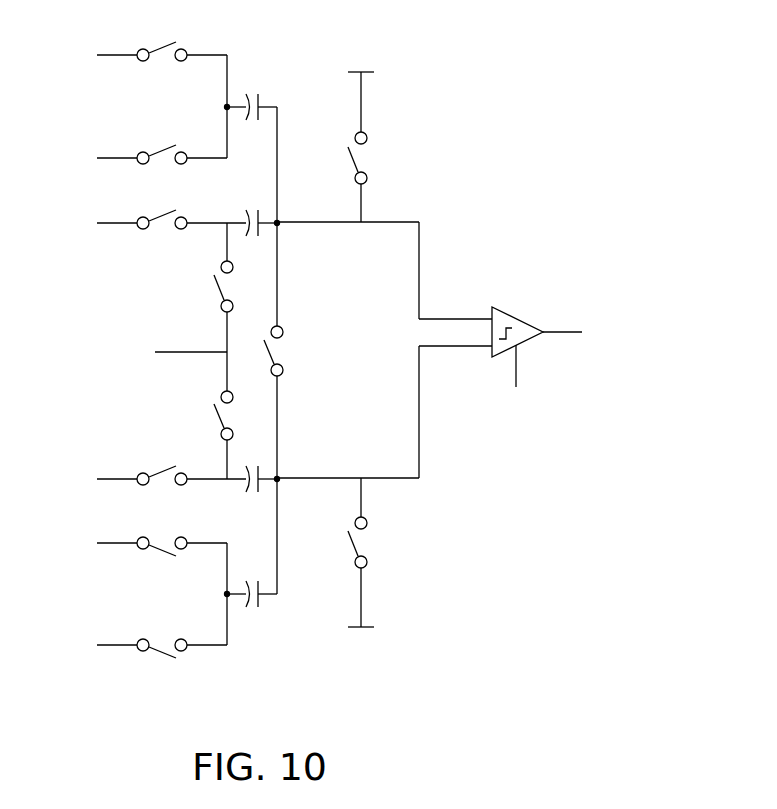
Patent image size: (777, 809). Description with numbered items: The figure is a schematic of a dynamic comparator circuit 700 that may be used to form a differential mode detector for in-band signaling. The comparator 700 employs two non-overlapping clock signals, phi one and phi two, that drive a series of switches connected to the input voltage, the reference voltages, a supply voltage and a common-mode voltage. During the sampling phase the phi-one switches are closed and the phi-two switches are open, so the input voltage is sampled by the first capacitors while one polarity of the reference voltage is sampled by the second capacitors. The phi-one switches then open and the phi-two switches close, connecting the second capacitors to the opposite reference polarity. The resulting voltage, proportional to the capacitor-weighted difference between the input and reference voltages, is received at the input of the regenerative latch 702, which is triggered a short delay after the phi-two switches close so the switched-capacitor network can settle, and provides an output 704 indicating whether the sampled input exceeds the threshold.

The dynamic comparator circuit 700 is at (337, 356).
The regenerative latch 702 is at (502, 312).
The output 704 is at (574, 331).